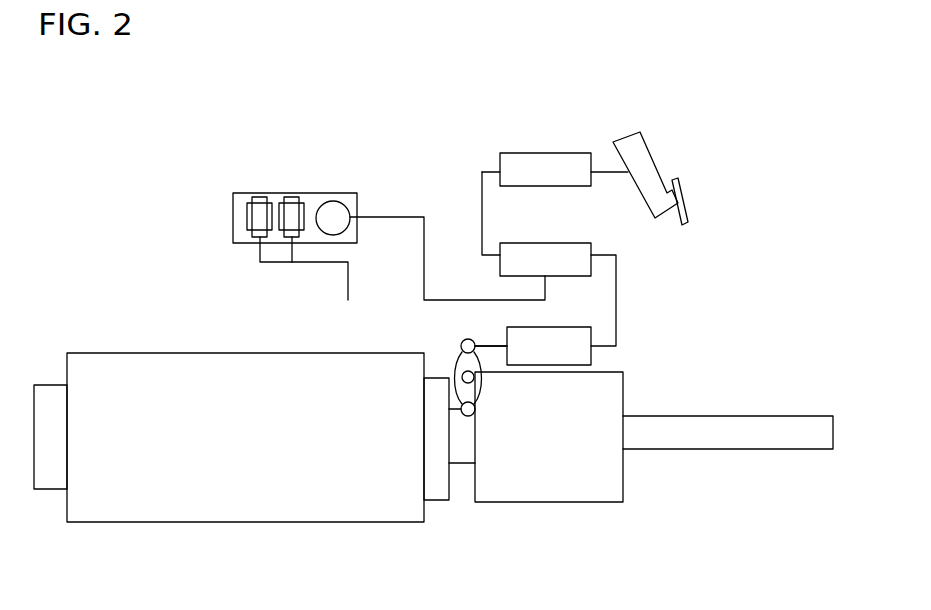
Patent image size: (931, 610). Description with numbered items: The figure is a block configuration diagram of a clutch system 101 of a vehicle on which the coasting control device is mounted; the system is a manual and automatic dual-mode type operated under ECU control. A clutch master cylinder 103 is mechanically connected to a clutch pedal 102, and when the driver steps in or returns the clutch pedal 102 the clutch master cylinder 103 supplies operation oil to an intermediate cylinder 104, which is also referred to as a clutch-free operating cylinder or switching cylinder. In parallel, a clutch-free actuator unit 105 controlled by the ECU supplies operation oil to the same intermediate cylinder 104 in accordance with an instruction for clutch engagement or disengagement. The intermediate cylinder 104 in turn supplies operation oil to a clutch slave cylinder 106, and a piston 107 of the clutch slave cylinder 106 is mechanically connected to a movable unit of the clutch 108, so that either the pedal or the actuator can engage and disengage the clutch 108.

The clutch system 101 is at (183, 133).
The clutch pedal 102 is at (688, 200).
The clutch master cylinder 103 is at (528, 152).
The intermediate cylinder 104 is at (572, 243).
The clutch-free actuator unit 105 is at (233, 218).
The clutch slave cylinder 106 is at (577, 327).
The piston 107 is at (494, 343).
The clutch 108 is at (456, 376).